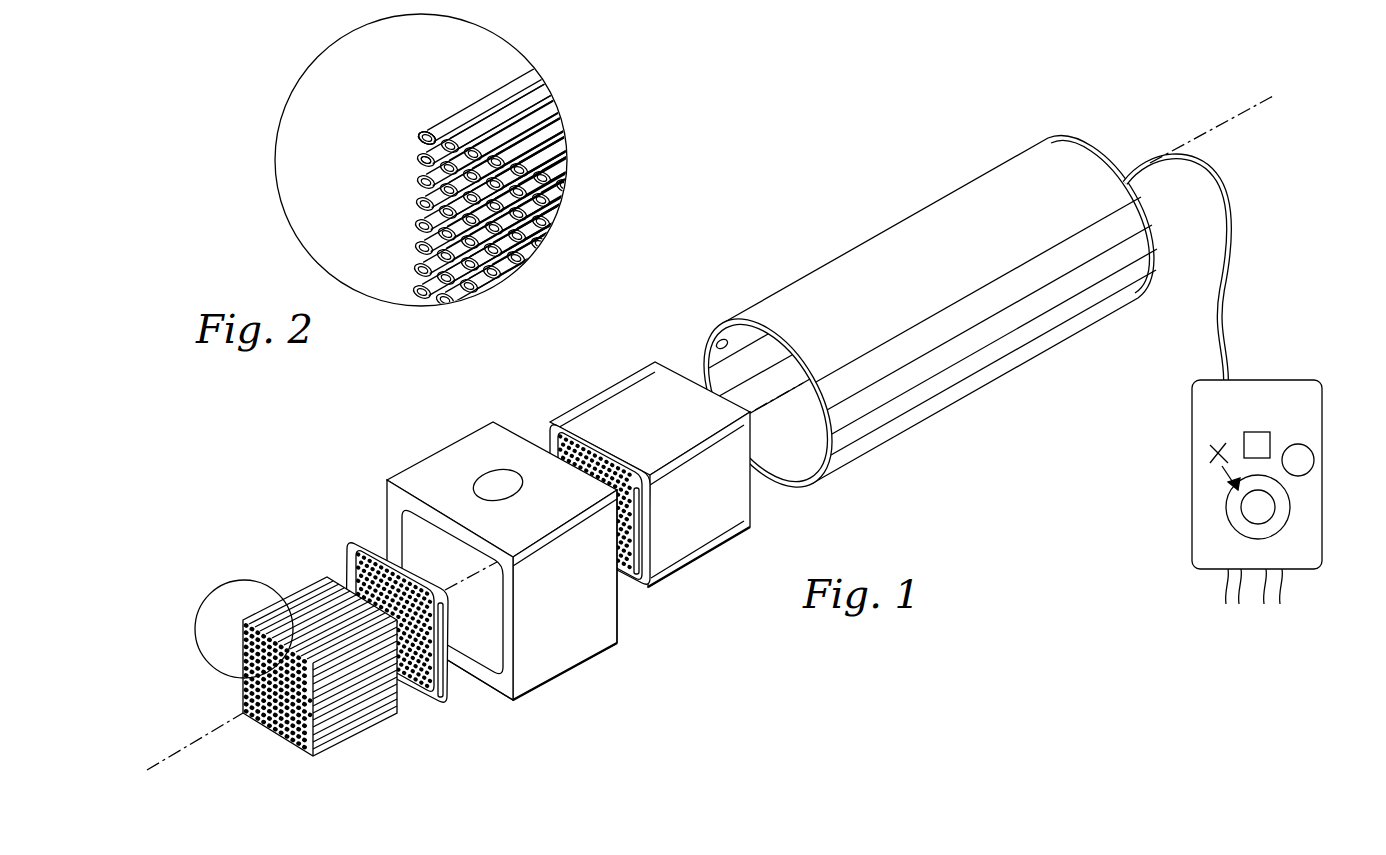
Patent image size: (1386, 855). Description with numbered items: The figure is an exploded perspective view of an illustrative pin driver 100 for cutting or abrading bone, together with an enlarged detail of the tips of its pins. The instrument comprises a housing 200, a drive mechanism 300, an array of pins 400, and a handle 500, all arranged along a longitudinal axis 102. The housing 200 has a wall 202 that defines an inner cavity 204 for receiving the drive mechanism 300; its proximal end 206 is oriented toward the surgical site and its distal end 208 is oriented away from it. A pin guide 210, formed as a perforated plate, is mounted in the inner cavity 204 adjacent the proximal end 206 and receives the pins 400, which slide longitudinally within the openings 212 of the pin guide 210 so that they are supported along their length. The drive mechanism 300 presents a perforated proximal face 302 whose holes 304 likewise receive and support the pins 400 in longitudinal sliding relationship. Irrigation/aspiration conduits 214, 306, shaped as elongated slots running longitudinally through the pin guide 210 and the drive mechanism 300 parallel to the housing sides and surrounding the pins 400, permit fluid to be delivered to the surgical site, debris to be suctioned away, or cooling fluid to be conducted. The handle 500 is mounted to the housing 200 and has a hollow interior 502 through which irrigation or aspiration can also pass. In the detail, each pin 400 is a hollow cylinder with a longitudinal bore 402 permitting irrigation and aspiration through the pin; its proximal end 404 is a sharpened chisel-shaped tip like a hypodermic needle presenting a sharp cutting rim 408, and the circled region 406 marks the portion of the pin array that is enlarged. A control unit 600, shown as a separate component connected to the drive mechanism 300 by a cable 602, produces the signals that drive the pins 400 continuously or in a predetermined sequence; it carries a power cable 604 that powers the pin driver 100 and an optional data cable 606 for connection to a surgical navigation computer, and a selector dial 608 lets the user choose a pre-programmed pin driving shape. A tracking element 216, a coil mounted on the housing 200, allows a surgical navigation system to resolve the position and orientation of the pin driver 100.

In FIG. 1, the pin driver 100 is at (812, 128).
In FIG. 1, the longitudinal axis 102 is at (207, 731).
In FIG. 1, the housing 200 is at (524, 575).
In FIG. 1, the wall 202 is at (568, 648).
In FIG. 1, the inner cavity 204 is at (484, 655).
In FIG. 1, the proximal end 206 is at (512, 703).
In FIG. 1, the distal end 208 is at (620, 624).
In FIG. 1, the pin guide 210 is at (390, 638).
In FIG. 1, the openings 212 is at (403, 694).
In FIG. 1, the irrigation/aspiration conduit 214 is at (438, 708).
In FIG. 1, the tracking element 216 is at (498, 470).
In FIG. 1, the drive mechanism 300 is at (651, 490).
In FIG. 1, the proximal face 302 is at (650, 598).
In FIG. 1, the holes 304 is at (651, 533).
In FIG. 1, the irrigation/aspiration conduit 306 is at (645, 532).
In FIG. 1, the array of pins 400 is at (290, 758).
In FIG. 2, the array of pins 400 is at (549, 157).
In FIG. 2, the longitudinal bore 402 is at (428, 131).
In FIG. 2, the proximal ends 404 is at (410, 135).
In FIG. 1, the enlarged region of bundle 406 is at (315, 580).
In FIG. 2, the cutting rim 408 is at (418, 153).
In FIG. 1, the handle 500 is at (917, 313).
In FIG. 1, the hollow interior 502 is at (713, 338).
In FIG. 1, the control unit 600 is at (1242, 529).
In FIG. 1, the cable 602 is at (1232, 228).
In FIG. 1, the power cable 604 is at (1228, 604).
In FIG. 1, the data cable 606 is at (1272, 604).
In FIG. 1, the selector dial 608 is at (1290, 500).